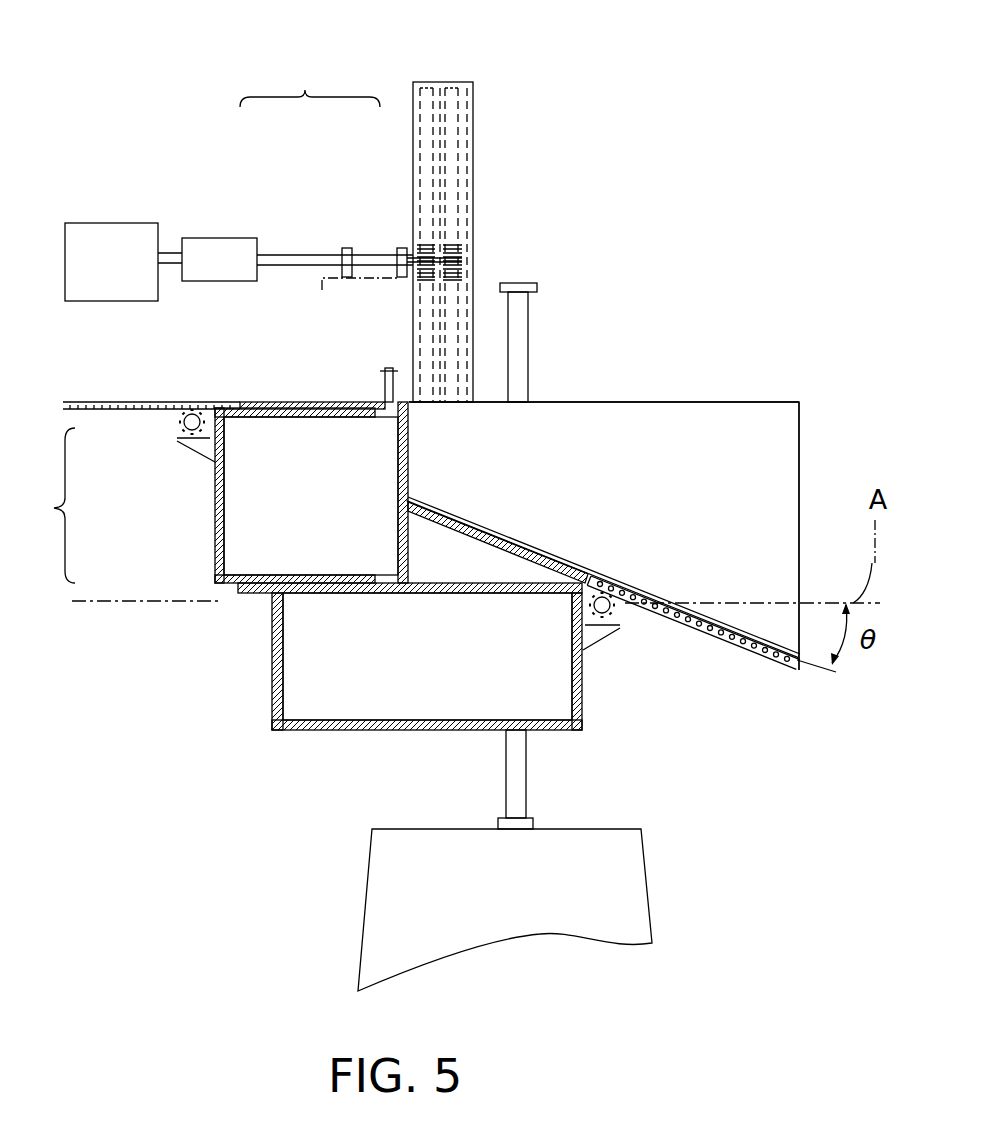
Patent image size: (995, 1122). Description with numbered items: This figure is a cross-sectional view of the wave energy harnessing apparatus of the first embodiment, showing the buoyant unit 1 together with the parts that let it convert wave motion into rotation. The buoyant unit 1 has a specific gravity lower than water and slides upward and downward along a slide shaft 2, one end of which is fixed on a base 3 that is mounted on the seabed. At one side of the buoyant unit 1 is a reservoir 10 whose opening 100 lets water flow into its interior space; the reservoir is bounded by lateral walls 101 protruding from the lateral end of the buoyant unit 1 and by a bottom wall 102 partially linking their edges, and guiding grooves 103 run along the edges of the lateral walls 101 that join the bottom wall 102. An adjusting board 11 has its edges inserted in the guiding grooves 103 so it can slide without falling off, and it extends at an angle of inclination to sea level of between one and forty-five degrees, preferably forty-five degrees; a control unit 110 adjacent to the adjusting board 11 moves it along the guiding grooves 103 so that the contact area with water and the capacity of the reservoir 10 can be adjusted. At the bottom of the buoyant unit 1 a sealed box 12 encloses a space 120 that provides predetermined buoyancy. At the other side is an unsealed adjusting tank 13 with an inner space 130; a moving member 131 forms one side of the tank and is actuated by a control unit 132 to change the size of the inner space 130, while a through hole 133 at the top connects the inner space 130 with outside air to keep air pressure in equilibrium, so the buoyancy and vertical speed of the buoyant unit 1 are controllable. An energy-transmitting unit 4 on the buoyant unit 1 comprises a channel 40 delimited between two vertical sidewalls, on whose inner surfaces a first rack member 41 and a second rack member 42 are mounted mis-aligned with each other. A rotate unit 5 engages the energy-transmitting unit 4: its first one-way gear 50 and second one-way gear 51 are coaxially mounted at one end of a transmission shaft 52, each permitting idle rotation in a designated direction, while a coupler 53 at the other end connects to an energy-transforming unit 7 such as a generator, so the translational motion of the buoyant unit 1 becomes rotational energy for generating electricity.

The buoyant unit 1 is at (638, 382).
The reservoir 10 is at (706, 454).
The opening 100 is at (788, 402).
The lateral walls 101 is at (598, 405).
The bottom wall 102 is at (488, 600).
The guiding grooves 103 is at (488, 600).
The adjusting board 11 is at (747, 632).
The control unit 110 is at (617, 610).
The sealed box 12 is at (272, 703).
The space 120 is at (390, 698).
The adjusting tank 13 is at (22, 525).
The inner space 130 is at (250, 557).
The moving member 131 is at (213, 523).
The control unit 132 is at (182, 428).
The through hole 133 is at (388, 375).
The slide shaft 2 is at (527, 768).
The base 3 is at (637, 860).
The energy-transmitting unit 4 is at (473, 92).
The channel 40 is at (441, 78).
The first rack member 41 is at (450, 82).
The second rack member 42 is at (430, 82).
The rotate unit 5 is at (297, 86).
The first one-way gear 50 is at (453, 240).
The second one-way gear 51 is at (427, 240).
The transmission shaft 52 is at (293, 258).
The coupler 53 is at (218, 248).
The energy-transforming unit 7 is at (124, 240).